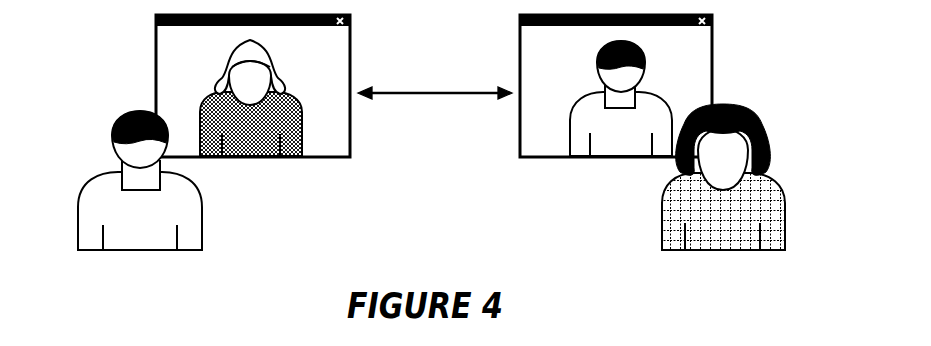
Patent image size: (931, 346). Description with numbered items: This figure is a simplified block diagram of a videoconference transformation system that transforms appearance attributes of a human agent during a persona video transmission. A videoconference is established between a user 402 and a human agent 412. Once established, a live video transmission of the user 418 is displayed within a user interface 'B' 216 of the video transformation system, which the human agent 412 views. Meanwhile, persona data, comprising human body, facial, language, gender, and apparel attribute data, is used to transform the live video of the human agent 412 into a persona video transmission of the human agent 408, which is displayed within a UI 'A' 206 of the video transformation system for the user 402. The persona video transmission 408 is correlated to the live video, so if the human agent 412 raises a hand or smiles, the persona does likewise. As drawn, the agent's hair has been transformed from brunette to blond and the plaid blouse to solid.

The user interface 'A' of the video transformation system 206 is at (273, 157).
The user interface 'B' of the video transformation system 216 is at (583, 158).
The user 402 is at (85, 190).
The persona video transmission of human agent 408 is at (215, 93).
The human agent 412 is at (786, 190).
The live video transmission of user 418 is at (658, 92).